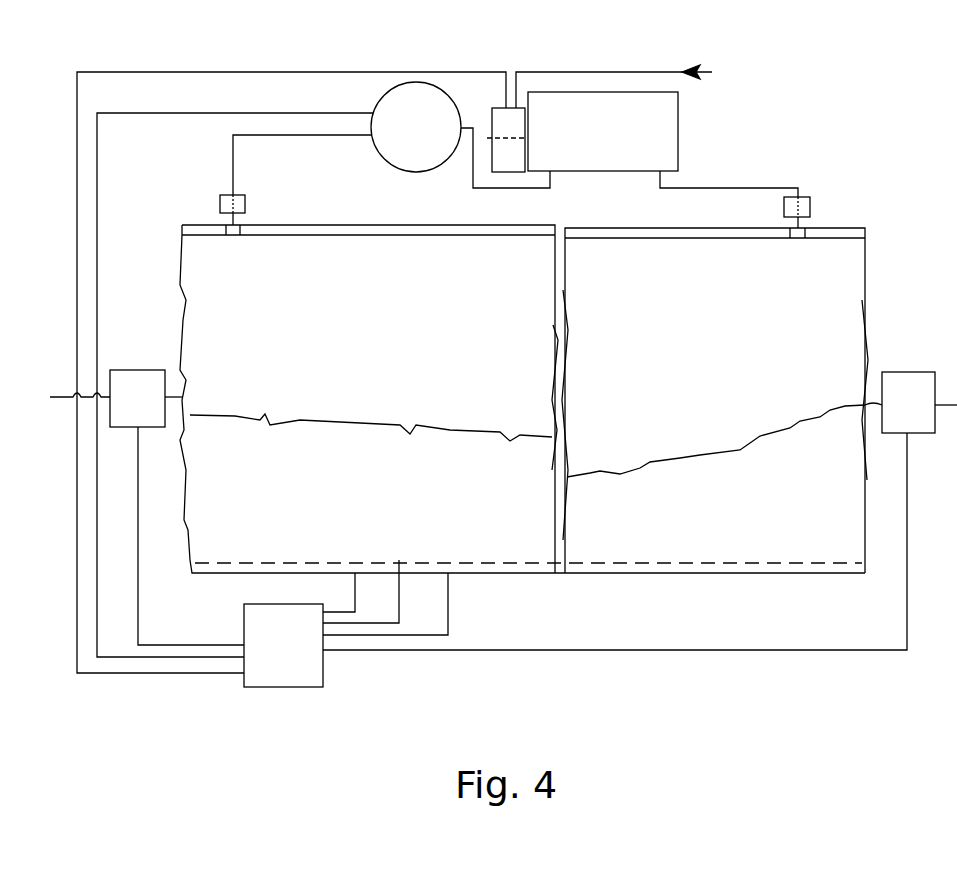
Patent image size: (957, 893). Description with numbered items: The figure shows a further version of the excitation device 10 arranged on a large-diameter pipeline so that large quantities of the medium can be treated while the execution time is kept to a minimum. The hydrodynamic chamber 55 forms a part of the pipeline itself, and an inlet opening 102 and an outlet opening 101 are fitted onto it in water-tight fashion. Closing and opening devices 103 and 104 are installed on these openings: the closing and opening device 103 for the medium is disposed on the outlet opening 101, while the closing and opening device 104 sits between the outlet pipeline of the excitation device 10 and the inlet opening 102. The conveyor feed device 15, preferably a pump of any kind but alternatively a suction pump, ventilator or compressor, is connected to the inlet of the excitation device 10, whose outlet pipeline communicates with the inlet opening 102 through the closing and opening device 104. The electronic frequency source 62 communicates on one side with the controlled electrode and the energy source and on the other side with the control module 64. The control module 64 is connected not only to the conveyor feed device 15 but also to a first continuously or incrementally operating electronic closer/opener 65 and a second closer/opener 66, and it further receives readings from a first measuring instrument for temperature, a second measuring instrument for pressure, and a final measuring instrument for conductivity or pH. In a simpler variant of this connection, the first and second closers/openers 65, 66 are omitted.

The excitation device 10 is at (567, 110).
The conveyor feed device 15 is at (410, 120).
The hydrodynamic chamber 55 is at (403, 342).
The electronic frequency source 62 is at (503, 120).
The control module 64 is at (297, 668).
The first continuously or incrementally operating electronic closer/opener 65 is at (135, 390).
The second closer/opener 66 is at (903, 390).
The outlet opening 101 is at (232, 237).
The inlet opening 102 is at (787, 234).
The closing and opening device 103 is at (248, 203).
The closing and opening device 104 is at (813, 203).